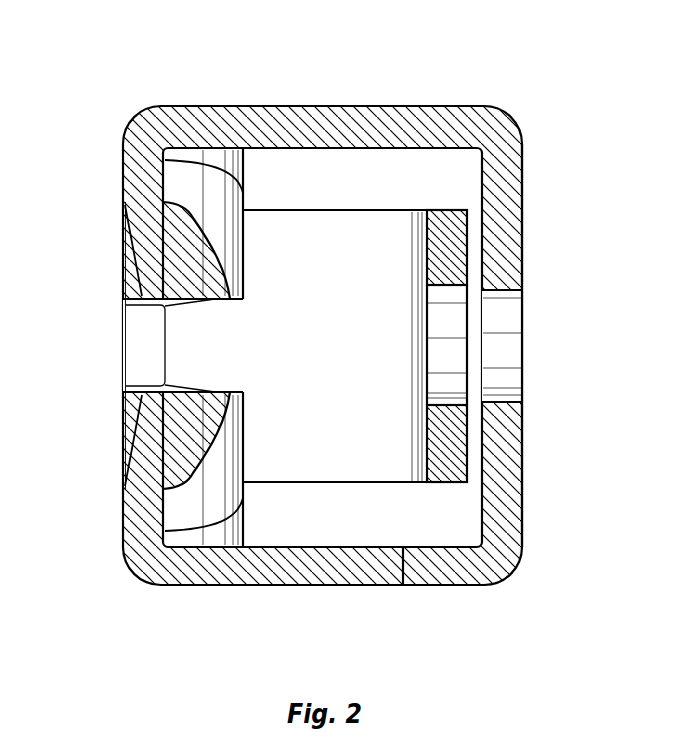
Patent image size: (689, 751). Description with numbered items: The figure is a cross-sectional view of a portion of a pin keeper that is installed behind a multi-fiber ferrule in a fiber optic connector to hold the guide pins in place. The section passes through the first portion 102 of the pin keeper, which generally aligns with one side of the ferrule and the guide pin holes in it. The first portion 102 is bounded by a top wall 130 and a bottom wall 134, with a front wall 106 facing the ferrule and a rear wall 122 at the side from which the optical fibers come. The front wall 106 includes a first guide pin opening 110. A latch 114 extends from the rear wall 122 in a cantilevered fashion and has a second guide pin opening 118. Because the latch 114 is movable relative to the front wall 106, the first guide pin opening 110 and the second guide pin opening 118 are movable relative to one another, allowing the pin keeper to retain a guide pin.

The first portion 102 is at (308, 339).
The front wall 106 is at (515, 205).
The first guide pin opening 110 is at (515, 350).
The latch 114 is at (382, 227).
The second guide pin opening 118 is at (433, 353).
The rear wall 122 is at (125, 202).
The top wall 130 is at (428, 104).
The bottom wall 134 is at (260, 587).